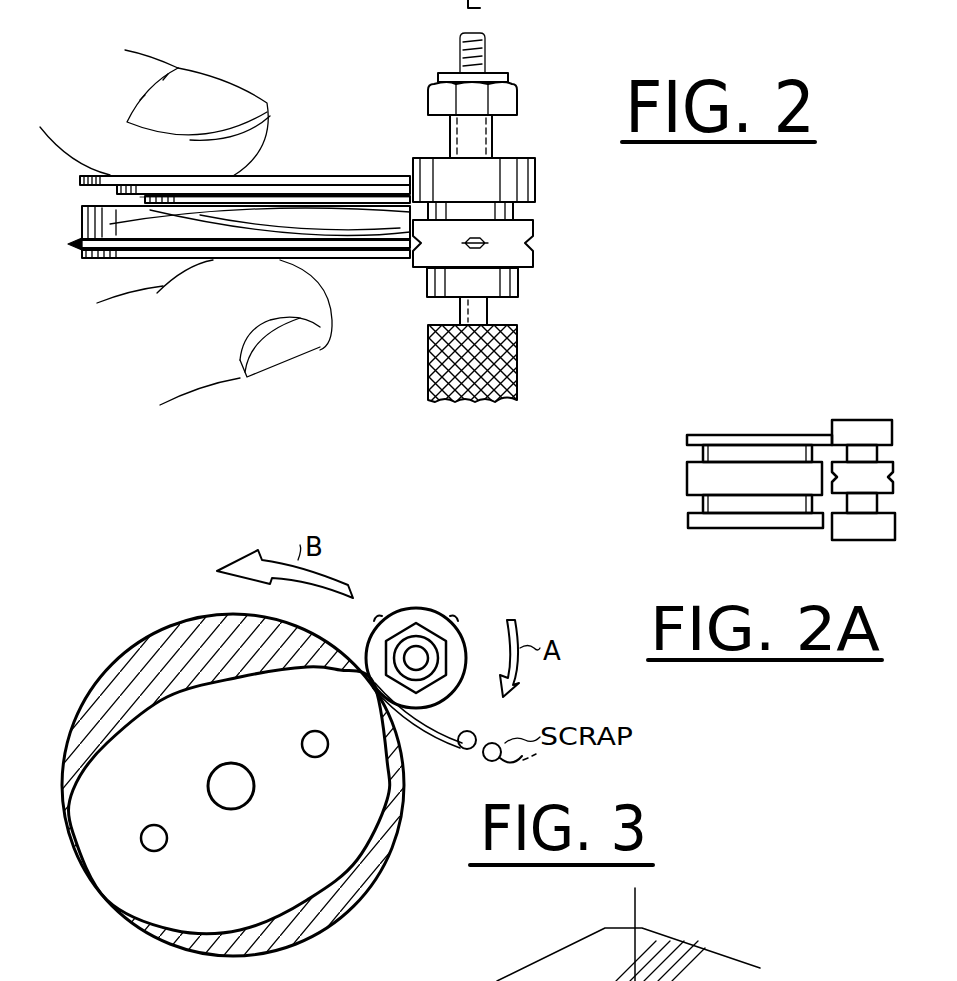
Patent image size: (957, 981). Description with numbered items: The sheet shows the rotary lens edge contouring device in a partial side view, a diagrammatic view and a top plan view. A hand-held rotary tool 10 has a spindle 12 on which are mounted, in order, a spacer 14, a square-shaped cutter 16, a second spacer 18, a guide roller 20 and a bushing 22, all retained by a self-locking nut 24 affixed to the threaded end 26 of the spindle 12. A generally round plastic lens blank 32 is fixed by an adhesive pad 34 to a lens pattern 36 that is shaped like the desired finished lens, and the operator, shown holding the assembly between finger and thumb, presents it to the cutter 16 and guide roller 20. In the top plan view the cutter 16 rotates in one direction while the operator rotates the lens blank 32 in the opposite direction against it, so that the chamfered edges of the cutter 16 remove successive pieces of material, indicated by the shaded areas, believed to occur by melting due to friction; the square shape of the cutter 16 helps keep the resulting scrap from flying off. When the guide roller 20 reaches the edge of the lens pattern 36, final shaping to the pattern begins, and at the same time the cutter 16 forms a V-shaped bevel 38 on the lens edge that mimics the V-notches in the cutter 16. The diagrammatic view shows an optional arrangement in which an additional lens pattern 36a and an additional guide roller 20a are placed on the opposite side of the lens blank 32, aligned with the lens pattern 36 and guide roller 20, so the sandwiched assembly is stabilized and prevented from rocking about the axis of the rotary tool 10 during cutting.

In FIG. 2, the rotary tool 10 is at (517, 365).
In FIG. 2, the spindle 12 is at (460, 310).
In FIG. 2, the spacer 14 is at (518, 285).
In FIG. 2, the cutter 16 is at (533, 245).
In FIG. 3, the cutter 16 is at (452, 697).
In FIG. 2, the spacer 18 is at (513, 210).
In FIG. 2, the guide roller 20 is at (535, 180).
In FIG. 2A, the guide roller 20 is at (855, 418).
In FIG. 3, the guide roller 20 is at (420, 608).
In FIG. 2A, the additional guide roller 20a is at (865, 540).
In FIG. 2, the bushing 22 is at (450, 130).
In FIG. 2, the self-locking nut 24 is at (518, 98).
In FIG. 2, the threaded end 26 is at (487, 55).
In FIG. 2, the lens blank 32 is at (74, 230).
In FIG. 2A, the lens blank 32 is at (687, 477).
In FIG. 3, the lens blank 32 is at (375, 862).
In FIG. 2A, the adhesive pad 34 is at (703, 455).
In FIG. 2, the lens pattern 36 is at (287, 177).
In FIG. 2A, the lens pattern 36 is at (772, 437).
In FIG. 3, the lens pattern 36 is at (325, 837).
In FIG. 2A, the additional lens pattern 36a is at (688, 520).
In FIG. 2, the V-shaped bevel 38 is at (386, 258).